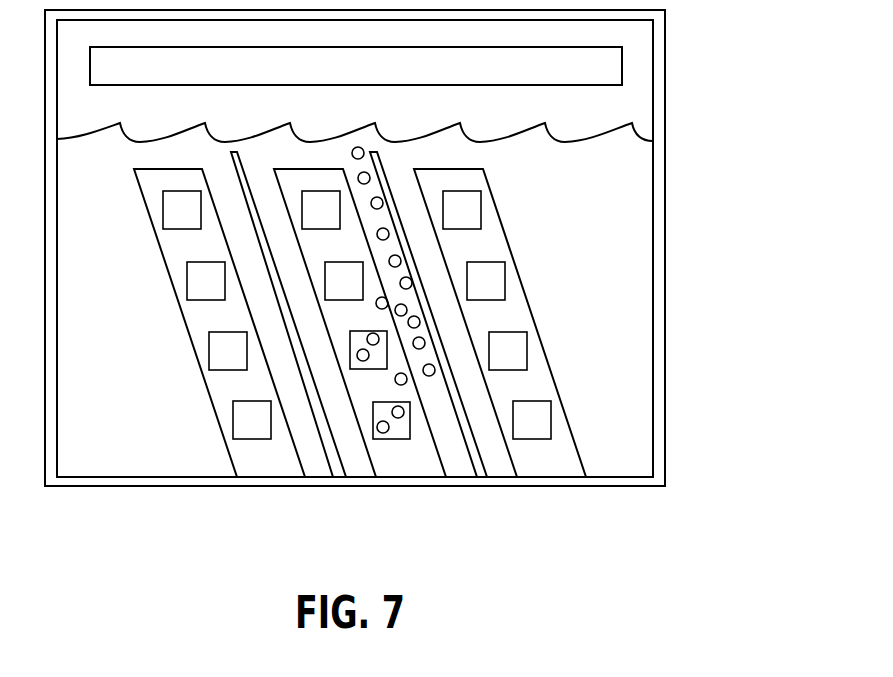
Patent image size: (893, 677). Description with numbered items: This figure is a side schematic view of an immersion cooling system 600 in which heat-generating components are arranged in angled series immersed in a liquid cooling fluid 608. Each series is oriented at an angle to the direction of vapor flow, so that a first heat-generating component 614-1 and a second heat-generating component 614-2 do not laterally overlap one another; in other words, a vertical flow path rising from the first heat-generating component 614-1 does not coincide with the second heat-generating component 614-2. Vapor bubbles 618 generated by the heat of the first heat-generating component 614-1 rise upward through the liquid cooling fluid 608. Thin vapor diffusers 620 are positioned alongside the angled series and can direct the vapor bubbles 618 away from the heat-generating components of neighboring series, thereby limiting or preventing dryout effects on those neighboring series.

The immersion cooling system 600 is at (695, 42).
The liquid cooling fluid 608 is at (607, 225).
The first heat-generating component 614-1 is at (400, 428).
The second heat-generating component 614-2 is at (375, 360).
The vapor bubbles 618 is at (428, 338).
The vapor diffuser 620 is at (455, 405).